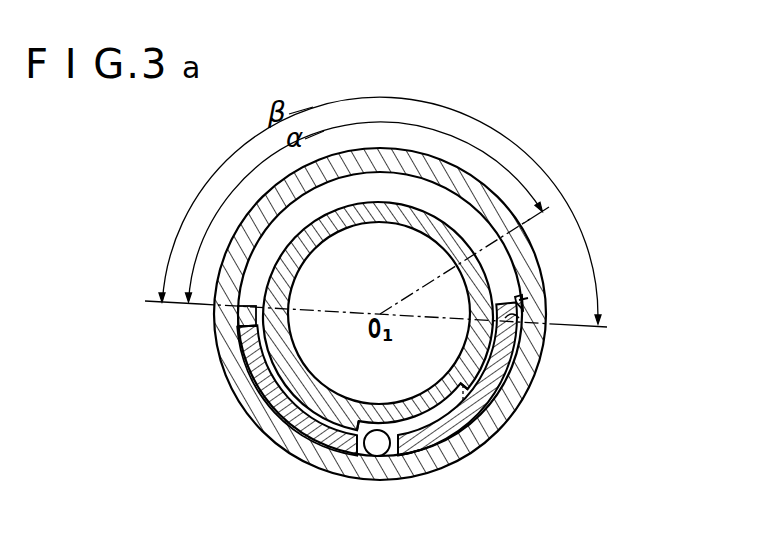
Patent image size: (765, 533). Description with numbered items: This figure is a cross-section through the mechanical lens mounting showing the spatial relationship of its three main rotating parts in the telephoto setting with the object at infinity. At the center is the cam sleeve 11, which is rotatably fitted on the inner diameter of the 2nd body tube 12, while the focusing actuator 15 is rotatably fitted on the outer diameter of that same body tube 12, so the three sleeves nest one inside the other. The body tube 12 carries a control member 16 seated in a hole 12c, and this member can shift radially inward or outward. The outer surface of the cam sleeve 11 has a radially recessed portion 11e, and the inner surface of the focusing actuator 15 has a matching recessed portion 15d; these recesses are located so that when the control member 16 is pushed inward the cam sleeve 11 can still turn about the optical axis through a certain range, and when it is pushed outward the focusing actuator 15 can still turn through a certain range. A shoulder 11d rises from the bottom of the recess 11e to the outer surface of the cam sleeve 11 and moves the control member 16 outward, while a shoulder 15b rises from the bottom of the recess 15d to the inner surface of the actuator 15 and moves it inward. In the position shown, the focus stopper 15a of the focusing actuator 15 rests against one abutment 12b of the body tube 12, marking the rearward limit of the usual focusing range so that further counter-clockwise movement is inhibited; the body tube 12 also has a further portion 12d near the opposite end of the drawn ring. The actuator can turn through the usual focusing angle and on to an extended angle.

The cam sleeve 11 is at (380, 212).
The shoulder 11d is at (472, 430).
The recessed portion 11e is at (414, 403).
The 2nd body tube 12 is at (500, 396).
The abutment 12b is at (246, 346).
The hole 12c is at (360, 460).
The ring hook end 12d is at (520, 320).
The focusing actuator 15 is at (496, 204).
The focus stopper 15a is at (237, 313).
The shoulder 15b is at (530, 300).
The recessed portion 15d is at (437, 457).
The control member 16 is at (378, 452).